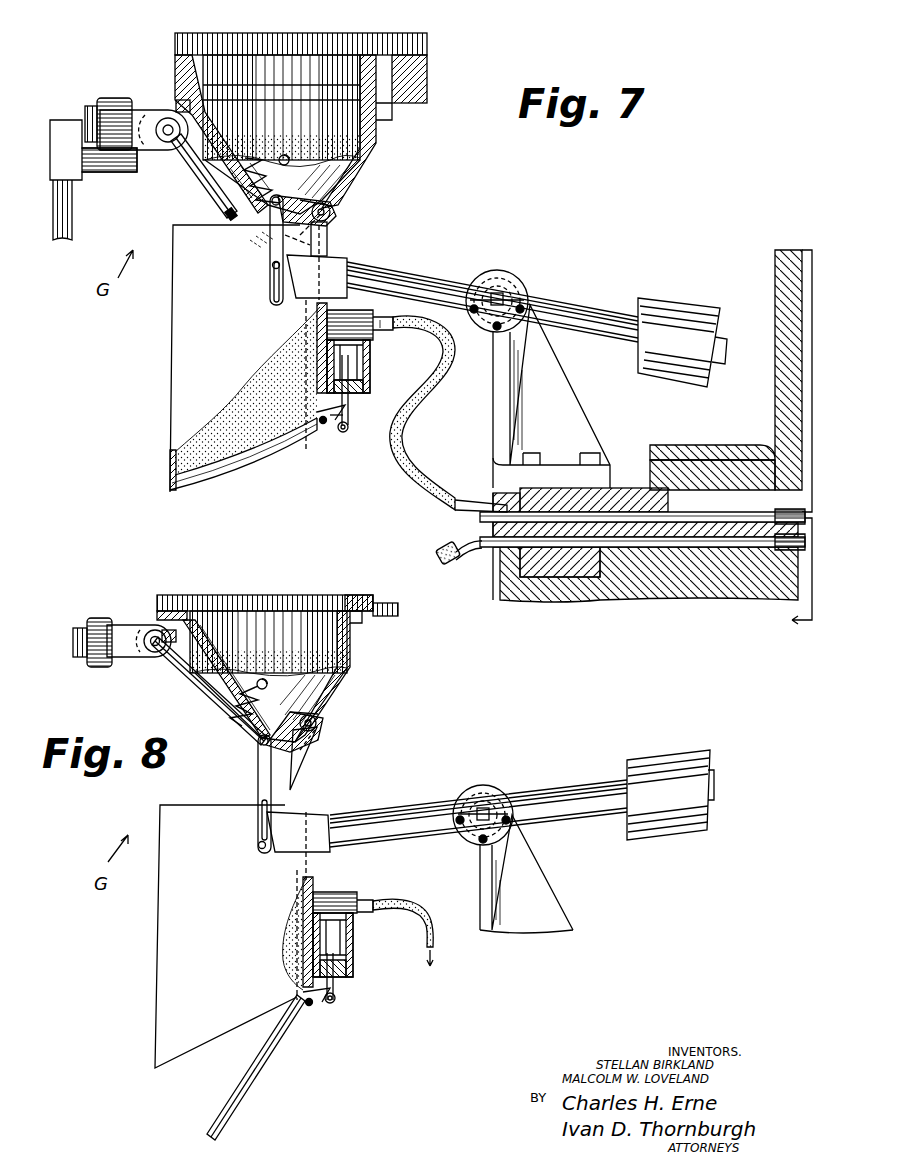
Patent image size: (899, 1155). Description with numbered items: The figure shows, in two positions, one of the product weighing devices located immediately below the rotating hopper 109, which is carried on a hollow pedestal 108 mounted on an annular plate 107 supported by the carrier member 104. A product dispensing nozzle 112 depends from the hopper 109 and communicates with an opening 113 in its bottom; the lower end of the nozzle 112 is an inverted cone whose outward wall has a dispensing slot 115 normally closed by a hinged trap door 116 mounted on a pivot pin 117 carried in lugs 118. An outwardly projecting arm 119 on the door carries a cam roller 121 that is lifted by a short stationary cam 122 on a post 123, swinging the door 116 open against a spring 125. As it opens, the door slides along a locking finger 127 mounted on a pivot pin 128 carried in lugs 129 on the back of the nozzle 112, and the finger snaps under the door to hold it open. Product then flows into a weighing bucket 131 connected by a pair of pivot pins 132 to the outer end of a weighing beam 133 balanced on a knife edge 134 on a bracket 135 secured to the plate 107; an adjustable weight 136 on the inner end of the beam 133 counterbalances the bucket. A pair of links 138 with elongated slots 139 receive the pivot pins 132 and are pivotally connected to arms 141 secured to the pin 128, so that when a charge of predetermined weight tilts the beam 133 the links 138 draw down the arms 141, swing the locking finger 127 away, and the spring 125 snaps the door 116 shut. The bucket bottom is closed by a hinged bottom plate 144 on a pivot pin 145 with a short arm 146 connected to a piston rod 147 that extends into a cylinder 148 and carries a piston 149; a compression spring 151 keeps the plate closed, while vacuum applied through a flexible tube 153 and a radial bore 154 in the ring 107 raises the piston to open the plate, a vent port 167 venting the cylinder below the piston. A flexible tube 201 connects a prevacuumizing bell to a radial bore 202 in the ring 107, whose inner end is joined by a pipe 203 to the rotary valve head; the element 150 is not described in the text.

In FIG. 7, the carrier member 104 is at (664, 592).
In FIG. 7, the annular plate 107 is at (614, 488).
In FIG. 7, the hollow pedestal 108 is at (778, 404).
In FIG. 7, the hopper 109 is at (173, 45).
In FIG. 8, the hopper 109 is at (172, 597).
In FIG. 7, the product dispensing nozzle 112 is at (360, 137).
In FIG. 8, the product dispensing nozzle 112 is at (352, 641).
In FIG. 7, the opening 113 is at (331, 84).
In FIG. 8, the opening 113 is at (295, 609).
In FIG. 7, the dispensing slot 115 is at (240, 178).
In FIG. 8, the dispensing slot 115 is at (236, 695).
In FIG. 7, the trap door 116 is at (205, 182).
In FIG. 8, the trap door 116 is at (196, 660).
In FIG. 7, the pivot pin 117 is at (166, 136).
In FIG. 8, the pivot pin 117 is at (155, 652).
In FIG. 7, the lugs 118 is at (176, 106).
In FIG. 8, the lugs 118 is at (162, 632).
In FIG. 7, the arm 119 is at (145, 115).
In FIG. 8, the arm 119 is at (122, 652).
In FIG. 7, the cam roller 121 is at (114, 100).
In FIG. 8, the cam roller 121 is at (96, 620).
In FIG. 7, the stationary cam 122 is at (112, 160).
In FIG. 7, the post 123 is at (72, 228).
In FIG. 7, the spring 125 is at (270, 170).
In FIG. 8, the spring 125 is at (264, 680).
In FIG. 7, the locking finger 127 is at (328, 232).
In FIG. 8, the locking finger 127 is at (318, 744).
In FIG. 7, the pivot pin 128 is at (331, 214).
In FIG. 8, the pivot pin 128 is at (318, 722).
In FIG. 7, the lugs 129 is at (326, 207).
In FIG. 8, the lugs 129 is at (316, 716).
In FIG. 7, the weighing bucket 131 is at (185, 346).
In FIG. 8, the weighing bucket 131 is at (172, 955).
In FIG. 7, the pivot pins 132 is at (272, 265).
In FIG. 8, the pivot pins 132 is at (258, 846).
In FIG. 7, the weighing beam 133 is at (432, 287).
In FIG. 8, the weighing beam 133 is at (548, 798).
In FIG. 7, the knife edge 134 is at (500, 296).
In FIG. 8, the knife edge 134 is at (482, 808).
In FIG. 7, the bracket 135 is at (555, 404).
In FIG. 8, the bracket 135 is at (534, 880).
In FIG. 7, the adjustable weight 136 is at (672, 306).
In FIG. 8, the adjustable weight 136 is at (660, 756).
In FIG. 7, the links 138 is at (268, 232).
In FIG. 8, the links 138 is at (258, 778).
In FIG. 7, the elongated slots 139 is at (272, 292).
In FIG. 8, the elongated slots 139 is at (255, 826).
In FIG. 7, the arms 141 is at (300, 200).
In FIG. 8, the arms 141 is at (308, 752).
In FIG. 7, the bottom plate 144 is at (268, 462).
In FIG. 8, the bottom plate 144 is at (254, 1082).
In FIG. 7, the pivot pin 145 is at (321, 426).
In FIG. 8, the pivot pin 145 is at (312, 1010).
In FIG. 7, the arm 146 is at (343, 433).
In FIG. 8, the arm 146 is at (332, 1004).
In FIG. 7, the piston rod 147 is at (349, 408).
In FIG. 8, the piston rod 147 is at (334, 960).
In FIG. 7, the cylinder 148 is at (367, 372).
In FIG. 8, the cylinder 148 is at (355, 946).
In FIG. 7, the piston 149 is at (352, 350).
In FIG. 8, the piston 149 is at (350, 922).
In FIG. 7, the casting 150 is at (720, 476).
In FIG. 7, the compression spring 151 is at (318, 316).
In FIG. 8, the compression spring 151 is at (330, 890).
In FIG. 7, the flexible tube 153 is at (426, 418).
In FIG. 8, the flexible tube 153 is at (408, 900).
In FIG. 7, the radial bore 154 is at (644, 512).
In FIG. 7, the vent port 167 is at (355, 396).
In FIG. 8, the vent port 167 is at (340, 985).
In FIG. 7, the flexible tube 201 is at (438, 546).
In FIG. 7, the radial bore 202 is at (622, 552).
In FIG. 7, the pipe 203 is at (780, 545).